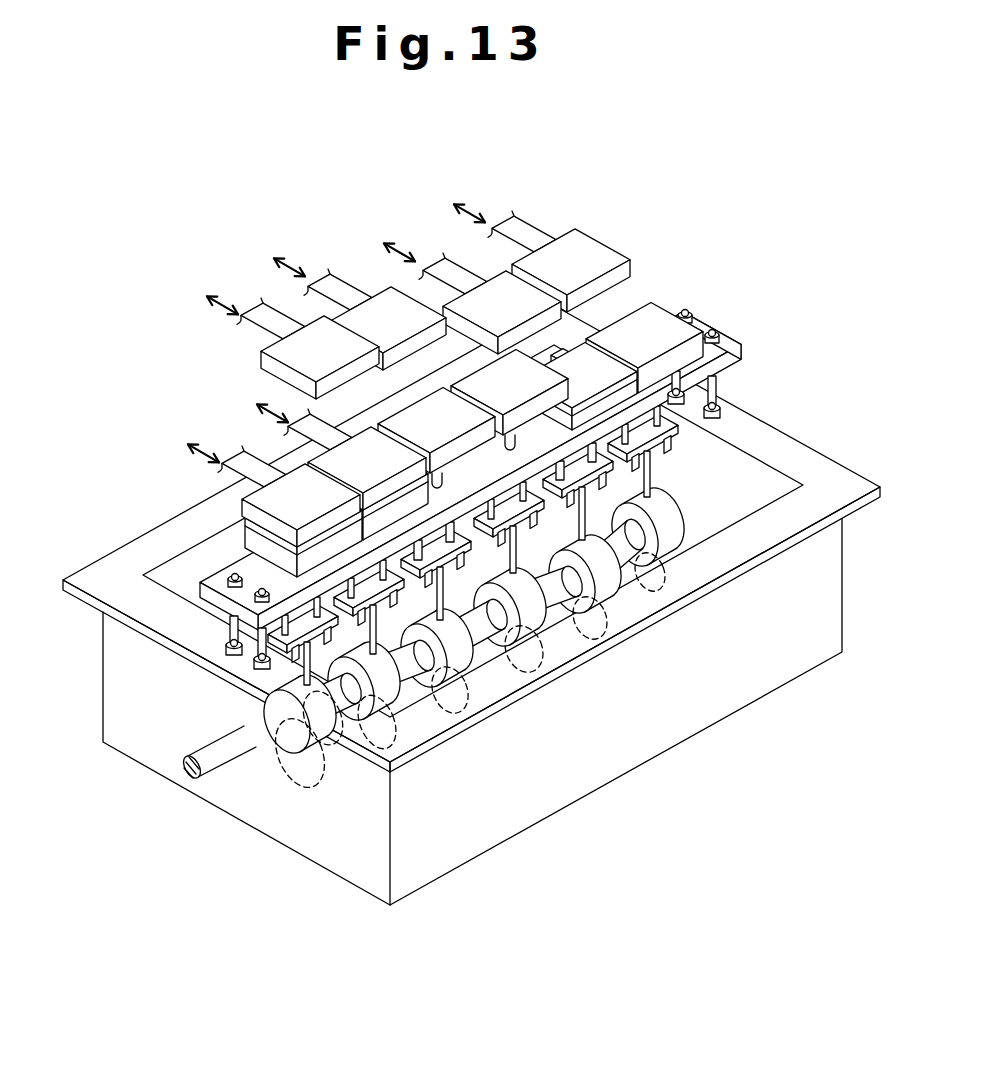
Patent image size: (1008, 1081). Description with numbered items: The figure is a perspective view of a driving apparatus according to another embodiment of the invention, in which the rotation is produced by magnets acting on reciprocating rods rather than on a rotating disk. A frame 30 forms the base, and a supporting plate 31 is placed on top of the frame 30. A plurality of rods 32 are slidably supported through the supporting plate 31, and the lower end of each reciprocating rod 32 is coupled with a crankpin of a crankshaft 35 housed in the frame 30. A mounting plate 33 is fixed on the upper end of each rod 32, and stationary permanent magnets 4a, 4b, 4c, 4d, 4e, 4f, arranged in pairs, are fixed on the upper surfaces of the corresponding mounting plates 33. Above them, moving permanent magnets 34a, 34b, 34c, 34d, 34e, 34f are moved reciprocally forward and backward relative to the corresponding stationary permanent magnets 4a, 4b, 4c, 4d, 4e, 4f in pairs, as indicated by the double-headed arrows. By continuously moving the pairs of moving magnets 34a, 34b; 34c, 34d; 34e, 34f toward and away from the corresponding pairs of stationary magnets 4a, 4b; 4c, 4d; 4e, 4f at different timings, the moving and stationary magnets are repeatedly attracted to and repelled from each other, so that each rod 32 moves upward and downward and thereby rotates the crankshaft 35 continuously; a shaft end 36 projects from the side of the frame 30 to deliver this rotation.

The stationary permanent magnet 4a is at (242, 536).
The stationary permanent magnet 4b is at (439, 472).
The stationary permanent magnet 4c is at (412, 410).
The stationary permanent magnet 4d is at (481, 377).
The stationary permanent magnet 4e is at (562, 414).
The stationary permanent magnet 4f is at (652, 314).
The frame 30 is at (845, 573).
The supporting plate 31 is at (740, 326).
The rod 32 is at (665, 445).
The mounting plate 33 is at (715, 355).
The moving permanent magnet 34a is at (286, 476).
The moving permanent magnet 34b is at (359, 446).
The moving permanent magnet 34c is at (314, 340).
The moving permanent magnet 34d is at (383, 300).
The moving permanent magnet 34e is at (490, 283).
The moving permanent magnet 34f is at (583, 240).
The crankshaft 35 is at (483, 612).
The drive shaft 36 is at (233, 757).